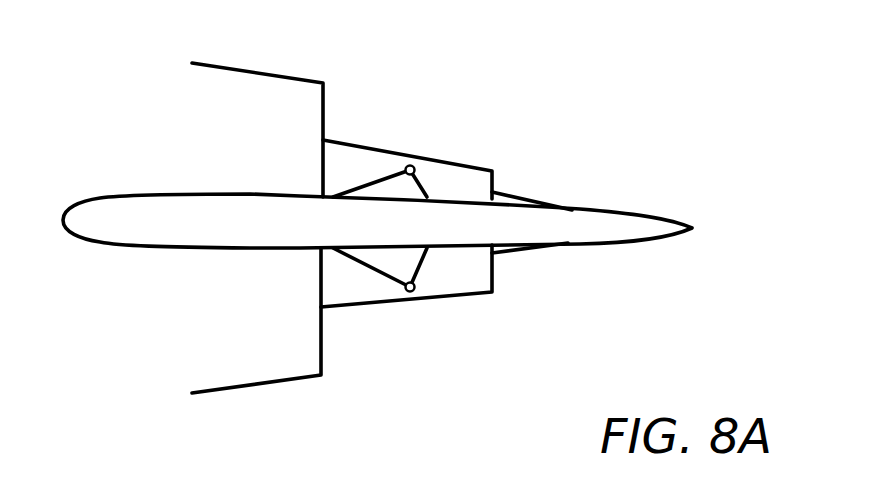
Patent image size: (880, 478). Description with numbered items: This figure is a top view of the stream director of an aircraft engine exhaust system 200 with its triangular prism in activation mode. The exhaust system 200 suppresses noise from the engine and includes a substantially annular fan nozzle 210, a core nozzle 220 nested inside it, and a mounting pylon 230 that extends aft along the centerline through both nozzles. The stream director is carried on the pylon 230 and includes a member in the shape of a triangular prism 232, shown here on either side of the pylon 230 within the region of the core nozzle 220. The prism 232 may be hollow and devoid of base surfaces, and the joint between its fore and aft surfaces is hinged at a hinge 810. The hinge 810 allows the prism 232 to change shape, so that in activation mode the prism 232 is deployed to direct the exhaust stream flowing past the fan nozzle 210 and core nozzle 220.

The exhaust system 200 is at (658, 74).
The fan nozzle 210 is at (288, 370).
The core nozzle 220 is at (462, 278).
The mounting pylon 230 is at (607, 235).
The prism 232 is at (358, 192).
The hinge 810 is at (419, 171).